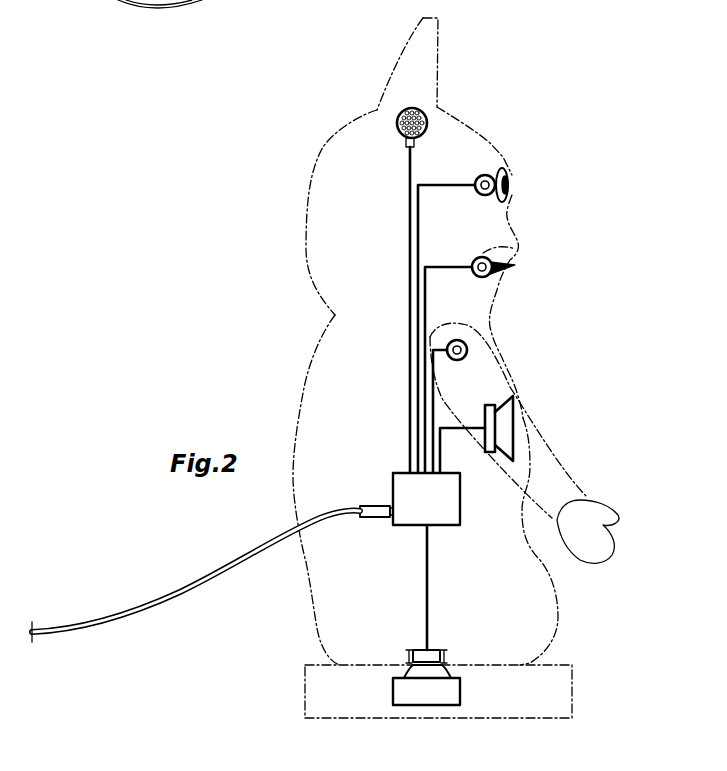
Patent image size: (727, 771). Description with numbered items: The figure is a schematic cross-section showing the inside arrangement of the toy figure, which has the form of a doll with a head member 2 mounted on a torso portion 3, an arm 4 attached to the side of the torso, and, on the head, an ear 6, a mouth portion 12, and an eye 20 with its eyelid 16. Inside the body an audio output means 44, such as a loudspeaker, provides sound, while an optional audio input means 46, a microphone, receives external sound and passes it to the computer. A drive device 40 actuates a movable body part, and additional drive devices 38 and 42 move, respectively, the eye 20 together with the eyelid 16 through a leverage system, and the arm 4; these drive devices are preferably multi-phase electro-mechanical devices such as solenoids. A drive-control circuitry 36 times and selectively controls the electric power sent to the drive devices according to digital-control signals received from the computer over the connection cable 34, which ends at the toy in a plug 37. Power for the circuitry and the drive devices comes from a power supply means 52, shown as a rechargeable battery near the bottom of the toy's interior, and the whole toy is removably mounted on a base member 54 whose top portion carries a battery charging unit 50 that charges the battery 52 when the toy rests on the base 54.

The head member 2 is at (306, 248).
The torso portion 3 is at (303, 393).
The arm 4 is at (575, 472).
The ear 6 is at (417, 26).
The mouth portion 12 is at (518, 257).
The eyelid 16 is at (502, 157).
The eye 20 is at (509, 185).
The connection cable 34 is at (185, 600).
The drive-control circuitry 36 is at (442, 526).
The plug 37 is at (378, 506).
The drive device 38 is at (485, 175).
The drive device 40 is at (475, 259).
The drive device 42 is at (463, 343).
The audio output means 44 is at (514, 431).
The audio input means 46 is at (397, 124).
The battery charging unit 50 is at (461, 690).
The power supply means 52 is at (432, 646).
The base member 54 is at (572, 690).